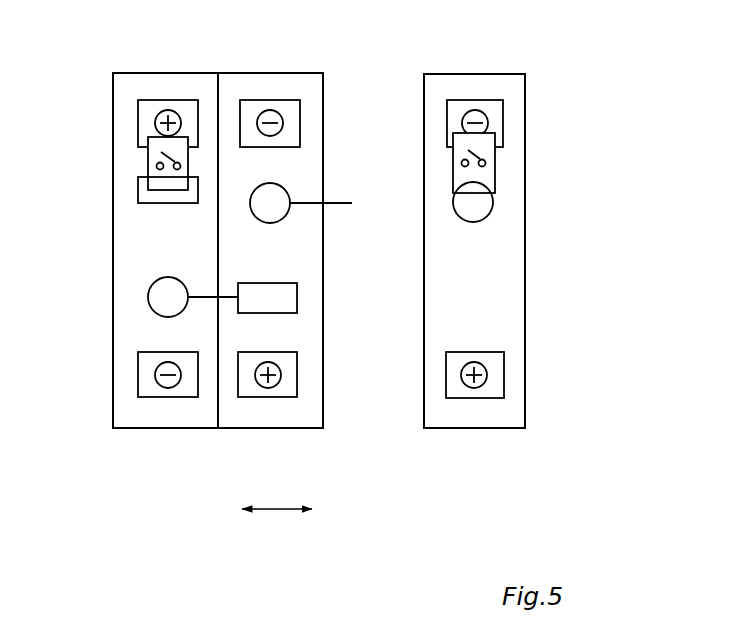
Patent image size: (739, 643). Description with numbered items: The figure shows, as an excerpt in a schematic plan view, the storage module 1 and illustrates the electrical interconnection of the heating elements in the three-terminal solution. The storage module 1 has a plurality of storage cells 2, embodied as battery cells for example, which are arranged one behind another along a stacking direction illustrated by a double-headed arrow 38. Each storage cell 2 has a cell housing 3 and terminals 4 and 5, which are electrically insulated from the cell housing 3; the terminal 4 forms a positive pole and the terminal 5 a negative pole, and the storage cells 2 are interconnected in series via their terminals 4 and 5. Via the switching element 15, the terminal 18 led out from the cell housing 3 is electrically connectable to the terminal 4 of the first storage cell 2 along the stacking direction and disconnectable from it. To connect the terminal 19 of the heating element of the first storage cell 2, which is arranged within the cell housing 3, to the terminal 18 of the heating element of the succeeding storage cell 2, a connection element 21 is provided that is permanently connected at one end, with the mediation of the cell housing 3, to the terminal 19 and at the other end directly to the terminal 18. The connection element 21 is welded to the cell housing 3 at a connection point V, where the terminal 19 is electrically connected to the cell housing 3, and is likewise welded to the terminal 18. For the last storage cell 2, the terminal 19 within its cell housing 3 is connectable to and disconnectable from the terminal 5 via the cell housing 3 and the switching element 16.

The storage module 1 is at (618, 75).
The storage cell 2 is at (113, 427).
The cell housing 3 is at (160, 429).
The terminal 4 is at (160, 100).
The terminal 5 is at (265, 100).
The switching element 15 is at (183, 148).
The switching element 16 is at (497, 160).
The terminal 18 is at (137, 189).
The terminal 19 is at (283, 186).
The connection element 21 is at (352, 203).
The connection point V is at (158, 312).
The double-headed arrow 38 is at (278, 511).